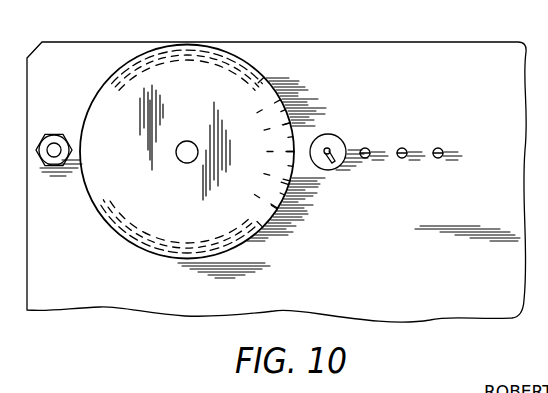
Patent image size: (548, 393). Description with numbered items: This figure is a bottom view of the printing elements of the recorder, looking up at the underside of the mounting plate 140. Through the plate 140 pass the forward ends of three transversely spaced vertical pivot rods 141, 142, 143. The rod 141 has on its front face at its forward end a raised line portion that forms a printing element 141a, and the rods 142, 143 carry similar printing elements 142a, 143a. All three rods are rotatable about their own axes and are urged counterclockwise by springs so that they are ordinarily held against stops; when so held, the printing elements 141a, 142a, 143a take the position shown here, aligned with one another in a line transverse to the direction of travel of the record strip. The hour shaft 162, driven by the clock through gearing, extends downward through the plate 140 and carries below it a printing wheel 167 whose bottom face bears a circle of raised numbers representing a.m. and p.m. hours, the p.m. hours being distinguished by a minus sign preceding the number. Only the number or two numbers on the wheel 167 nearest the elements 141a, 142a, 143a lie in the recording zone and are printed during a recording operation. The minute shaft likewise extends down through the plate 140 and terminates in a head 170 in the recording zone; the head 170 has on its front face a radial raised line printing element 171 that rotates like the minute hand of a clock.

The mounting plate 140 is at (433, 50).
The printing wheel 167 is at (278, 100).
The hour shaft 162 is at (187, 141).
The head 170 is at (334, 138).
The line printing element 171 is at (333, 165).
The pivot rod 141 is at (366, 159).
The printing element 141a is at (367, 148).
The pivot rod 142 is at (403, 159).
The printing element 142a is at (404, 148).
The pivot rod 143 is at (439, 159).
The printing element 143a is at (441, 149).